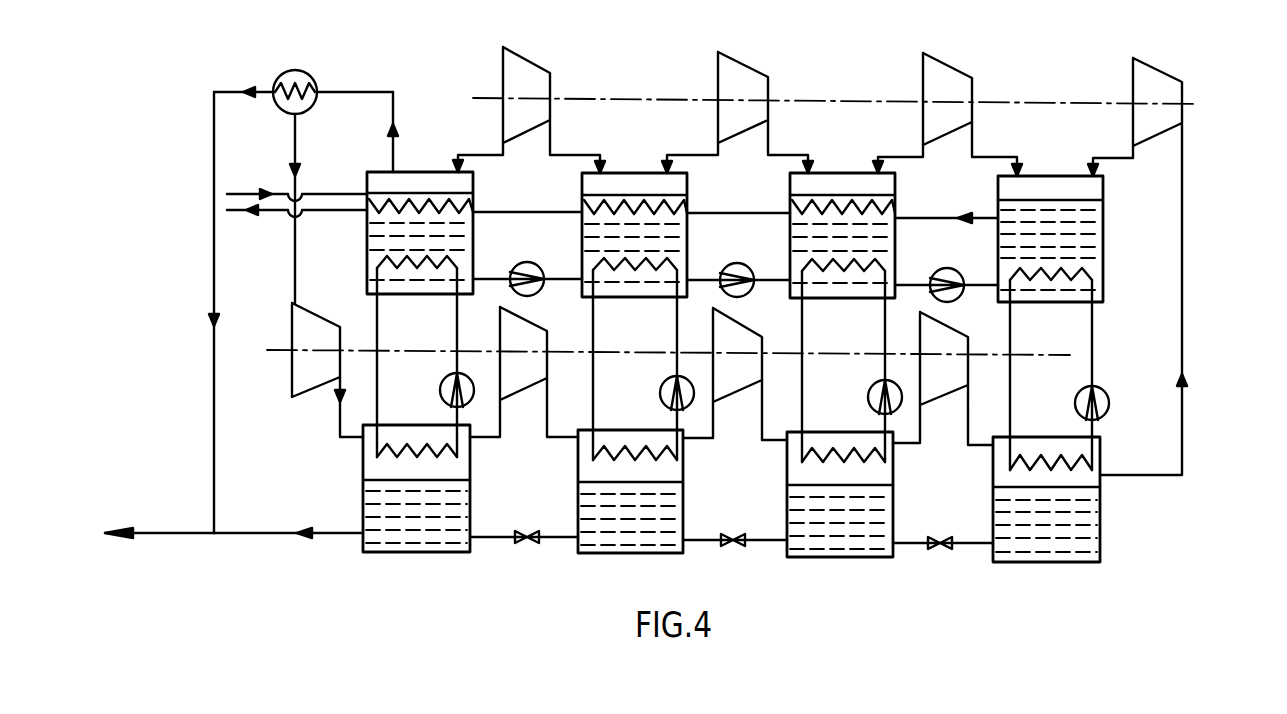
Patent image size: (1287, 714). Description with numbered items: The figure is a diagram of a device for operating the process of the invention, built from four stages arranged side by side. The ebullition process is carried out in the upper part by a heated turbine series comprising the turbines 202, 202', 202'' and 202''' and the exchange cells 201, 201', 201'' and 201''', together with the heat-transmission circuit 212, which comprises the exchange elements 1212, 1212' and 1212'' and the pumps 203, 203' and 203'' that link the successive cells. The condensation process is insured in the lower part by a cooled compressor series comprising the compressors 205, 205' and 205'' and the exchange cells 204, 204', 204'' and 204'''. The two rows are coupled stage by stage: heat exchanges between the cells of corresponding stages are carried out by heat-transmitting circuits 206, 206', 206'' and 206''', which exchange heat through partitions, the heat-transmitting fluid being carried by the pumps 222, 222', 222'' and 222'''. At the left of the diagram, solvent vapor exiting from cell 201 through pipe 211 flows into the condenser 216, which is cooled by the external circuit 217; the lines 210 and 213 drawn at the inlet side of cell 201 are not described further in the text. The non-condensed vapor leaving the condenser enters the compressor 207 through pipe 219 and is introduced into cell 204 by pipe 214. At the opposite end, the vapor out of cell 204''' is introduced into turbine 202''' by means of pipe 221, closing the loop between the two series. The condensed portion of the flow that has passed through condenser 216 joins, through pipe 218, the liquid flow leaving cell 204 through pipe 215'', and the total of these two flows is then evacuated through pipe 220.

The exchange cell 201 is at (448, 229).
The exchange cell 201' is at (665, 232).
The exchange cell 201'' is at (875, 232).
The exchange cell 201''' is at (1085, 235).
The turbine 202 is at (529, 110).
The turbine 202' is at (742, 112).
The turbine 202'' is at (953, 114).
The turbine 202''' is at (1127, 117).
The pump 203 is at (527, 265).
The pump 203' is at (738, 266).
The pump 203'' is at (946, 269).
The exchange cell 204 is at (416, 507).
The exchange cell 204' is at (630, 510).
The exchange cell 204'' is at (840, 513).
The exchange cell 204''' is at (1046, 516).
The compressor 205 is at (528, 372).
The compressor 205' is at (742, 374).
The compressor 205'' is at (954, 376).
The heat-transmitting circuit 206 is at (417, 362).
The heat-transmitting circuit 206' is at (635, 365).
The heat-transmitting circuit 206'' is at (843, 366).
The heat-transmitting circuit 206''' is at (1051, 375).
The compressor 207 is at (292, 384).
The inlet line 210 is at (242, 194).
The pipe 211 is at (394, 100).
The heat-transmission circuit 212 is at (980, 217).
The outlet line 213 is at (270, 215).
The pipe 214 is at (340, 438).
The pipe 215'' is at (288, 545).
The condenser 216 is at (339, 75).
The external circuit 217 is at (258, 86).
The pipe 218 is at (216, 272).
The pipe 219 is at (296, 146).
The pipe 220 is at (162, 533).
The pipe 221 is at (1182, 410).
The pump 222 is at (430, 390).
The pump 222' is at (650, 393).
The pump 222'' is at (859, 397).
The pump 222''' is at (1063, 403).
The exchange element 1212 is at (527, 205).
The exchange element 1212' is at (738, 205).
The exchange element 1212'' is at (946, 206).